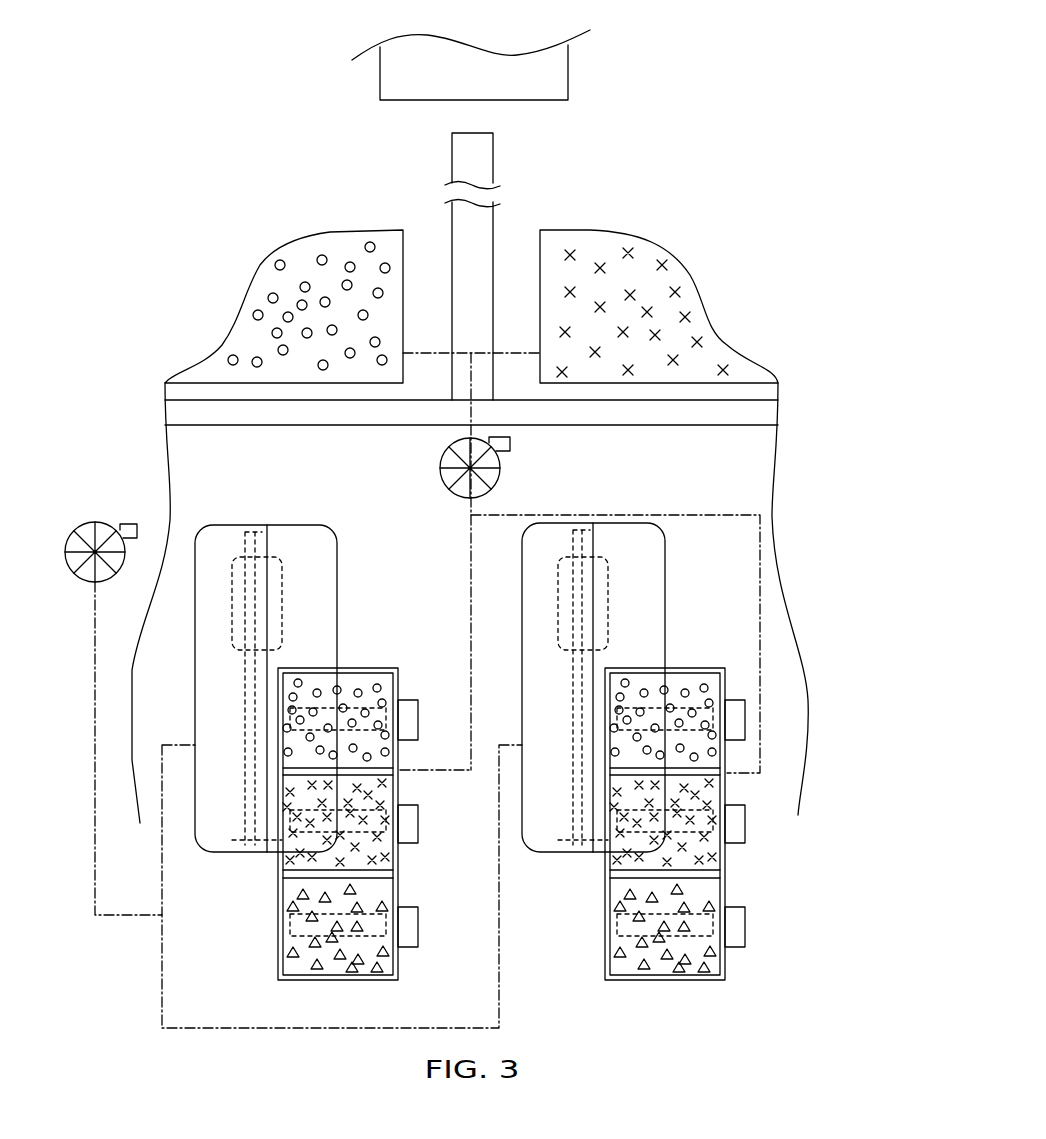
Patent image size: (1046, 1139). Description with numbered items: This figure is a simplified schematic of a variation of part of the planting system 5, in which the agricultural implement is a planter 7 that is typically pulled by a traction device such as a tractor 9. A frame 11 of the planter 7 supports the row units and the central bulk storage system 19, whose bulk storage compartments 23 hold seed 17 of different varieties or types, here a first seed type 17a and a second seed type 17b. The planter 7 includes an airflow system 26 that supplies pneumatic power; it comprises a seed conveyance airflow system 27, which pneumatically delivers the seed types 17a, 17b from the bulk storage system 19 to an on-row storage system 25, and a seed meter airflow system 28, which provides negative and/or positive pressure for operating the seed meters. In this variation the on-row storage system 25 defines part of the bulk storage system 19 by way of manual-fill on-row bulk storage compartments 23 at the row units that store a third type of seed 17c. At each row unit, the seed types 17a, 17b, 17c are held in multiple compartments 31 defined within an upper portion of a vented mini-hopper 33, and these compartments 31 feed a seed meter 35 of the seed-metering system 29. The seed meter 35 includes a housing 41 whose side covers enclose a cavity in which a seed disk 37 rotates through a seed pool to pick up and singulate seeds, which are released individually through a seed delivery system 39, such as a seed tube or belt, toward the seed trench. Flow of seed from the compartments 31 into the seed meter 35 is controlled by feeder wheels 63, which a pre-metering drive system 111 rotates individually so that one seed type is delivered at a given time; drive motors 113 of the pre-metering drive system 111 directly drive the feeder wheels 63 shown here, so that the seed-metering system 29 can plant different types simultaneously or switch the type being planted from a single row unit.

The planting system 5 is at (735, 158).
The planter 7 is at (778, 322).
The tractor 9 is at (578, 75).
The frame 11 is at (760, 420).
The seed 17 is at (343, 252).
The first seed type 17a is at (275, 300).
The second seed type 17b is at (683, 318).
The third seed type 17c is at (290, 950).
The bulk storage system 19 is at (657, 222).
The bulk storage compartments 23 is at (375, 222).
The on-row storage system 25 is at (390, 632).
The airflow system 26 is at (437, 485).
The seed conveyance airflow system 27 is at (441, 458).
The seed meter airflow system 28 is at (95, 812).
The seed-metering system 29 is at (222, 860).
The compartments 31 is at (388, 676).
The vented mini-hopper 33 is at (448, 858).
The seed meter 35 is at (262, 855).
The seed disk 37 is at (243, 752).
The seed delivery system 39 is at (282, 605).
The housing 41 is at (190, 672).
The feeder wheels 63 is at (327, 665).
The pre-metering drive system 111 is at (447, 688).
The drive motors 113 is at (418, 717).